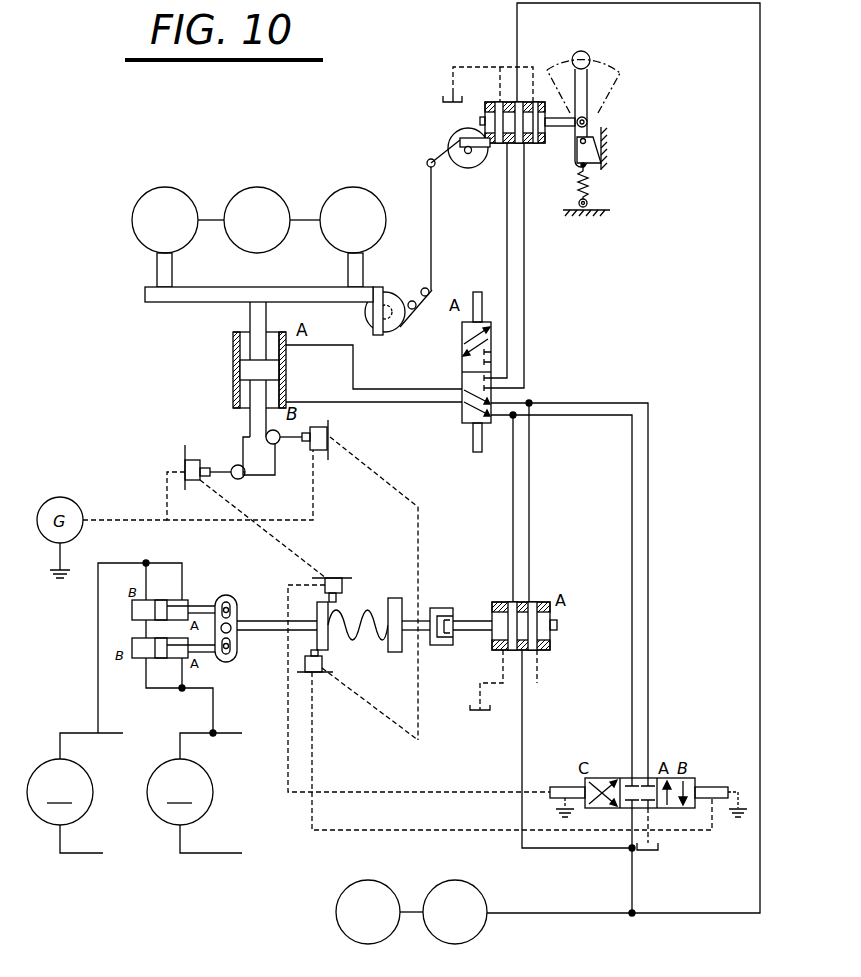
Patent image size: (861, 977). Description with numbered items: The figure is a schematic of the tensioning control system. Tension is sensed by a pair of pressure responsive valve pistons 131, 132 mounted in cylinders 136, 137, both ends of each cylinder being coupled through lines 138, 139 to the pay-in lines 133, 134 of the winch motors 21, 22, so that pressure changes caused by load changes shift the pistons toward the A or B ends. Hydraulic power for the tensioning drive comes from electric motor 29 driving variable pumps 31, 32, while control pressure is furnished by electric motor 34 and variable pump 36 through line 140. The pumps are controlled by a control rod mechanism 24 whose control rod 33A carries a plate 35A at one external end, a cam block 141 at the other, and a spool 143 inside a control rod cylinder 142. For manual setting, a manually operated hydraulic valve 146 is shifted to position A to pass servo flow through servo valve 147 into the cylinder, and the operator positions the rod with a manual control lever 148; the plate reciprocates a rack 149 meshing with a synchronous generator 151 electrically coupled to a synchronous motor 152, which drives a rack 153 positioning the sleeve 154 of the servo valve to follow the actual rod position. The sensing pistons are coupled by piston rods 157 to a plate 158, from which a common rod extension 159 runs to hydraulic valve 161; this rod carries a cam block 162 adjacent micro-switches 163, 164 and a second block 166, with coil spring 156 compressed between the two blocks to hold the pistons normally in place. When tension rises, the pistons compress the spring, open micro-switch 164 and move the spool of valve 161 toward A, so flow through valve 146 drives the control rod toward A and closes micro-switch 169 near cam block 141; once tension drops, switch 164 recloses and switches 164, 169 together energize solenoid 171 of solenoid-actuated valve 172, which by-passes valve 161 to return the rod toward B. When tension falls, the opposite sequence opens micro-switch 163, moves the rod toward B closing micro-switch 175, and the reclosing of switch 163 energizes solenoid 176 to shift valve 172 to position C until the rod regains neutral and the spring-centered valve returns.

The motor 21 is at (194, 806).
The motor 22 is at (65, 806).
The control rod mechanism 24 is at (144, 270).
The electric motor 29 is at (272, 174).
The variable pump 31 is at (185, 190).
The variable pump 32 is at (370, 176).
The control rod 33A is at (253, 316).
The electric motor 34 is at (395, 866).
The plate 35A is at (152, 293).
The variable pump 36 is at (480, 882).
The pressure responsive valve piston 131 is at (158, 612).
The pressure responsive valve piston 132 is at (165, 650).
The pay-in line 133 is at (196, 732).
The pay-in line 134 is at (82, 732).
The cylinder 136 is at (188, 600).
The cylinder 137 is at (175, 666).
The line 138 is at (124, 562).
The line 139 is at (213, 700).
The line 140 is at (688, 913).
The cam block 141 is at (262, 470).
The control rod cylinder 142 is at (286, 385).
The spool 143 is at (248, 368).
The manually operated hydraulic valve 146 is at (464, 360).
The servo valve 147 is at (489, 88).
The manual control lever 148 is at (587, 58).
The rack 149 is at (399, 278).
The synchronous generator 151 is at (391, 329).
The synchronous motor 152 is at (473, 166).
The rack 153 is at (446, 145).
The sleeve 154 is at (538, 147).
The coil spring 156 is at (358, 613).
The piston rod 157 is at (222, 605).
The plate 158 is at (240, 605).
The common rod extension 159 is at (259, 627).
The hydraulic valve 161 is at (500, 602).
The cam block 162 is at (326, 642).
The micro-switch 163 is at (346, 556).
The micro-switch 164 is at (312, 674).
The second block 166 is at (393, 651).
The micro-switch 169 is at (320, 450).
The solenoid 171 is at (705, 787).
The solenoid-actuated valve 172 is at (603, 776).
The micro-switch 175 is at (198, 480).
The solenoid 176 is at (568, 786).